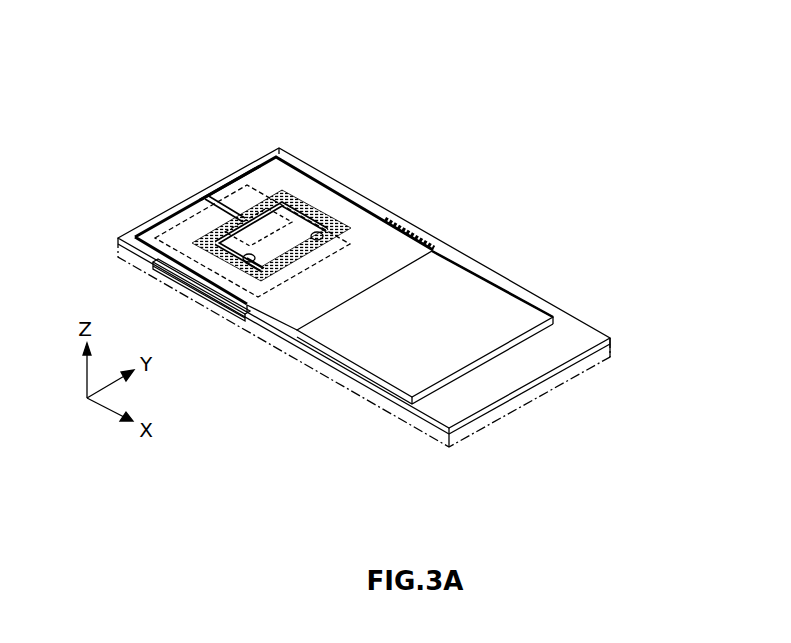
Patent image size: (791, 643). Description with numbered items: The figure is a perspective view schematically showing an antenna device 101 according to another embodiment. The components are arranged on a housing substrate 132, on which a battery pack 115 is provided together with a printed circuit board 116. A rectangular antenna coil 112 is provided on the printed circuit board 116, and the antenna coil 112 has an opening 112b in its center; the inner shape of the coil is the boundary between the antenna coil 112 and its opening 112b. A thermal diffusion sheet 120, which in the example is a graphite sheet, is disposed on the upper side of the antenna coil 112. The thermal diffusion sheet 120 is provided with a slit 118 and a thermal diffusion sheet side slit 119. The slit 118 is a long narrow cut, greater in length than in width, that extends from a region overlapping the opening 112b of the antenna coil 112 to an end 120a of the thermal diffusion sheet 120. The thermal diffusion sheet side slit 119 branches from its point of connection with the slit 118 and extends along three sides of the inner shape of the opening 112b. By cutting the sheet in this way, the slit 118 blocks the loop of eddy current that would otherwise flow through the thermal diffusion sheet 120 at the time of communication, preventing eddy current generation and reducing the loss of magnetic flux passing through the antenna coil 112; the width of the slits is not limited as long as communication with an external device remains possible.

The antenna device 101 is at (482, 188).
The antenna coil 112 is at (303, 200).
The opening 112b is at (343, 245).
The battery pack 115 is at (470, 290).
The printed circuit board 116 is at (198, 278).
The slit 118 is at (223, 205).
The thermal diffusion sheet side slit 119 is at (253, 262).
The thermal diffusion sheet 120 is at (285, 178).
The end of the thermal diffusion sheet 120a is at (230, 183).
The housing substrate 132 is at (567, 307).